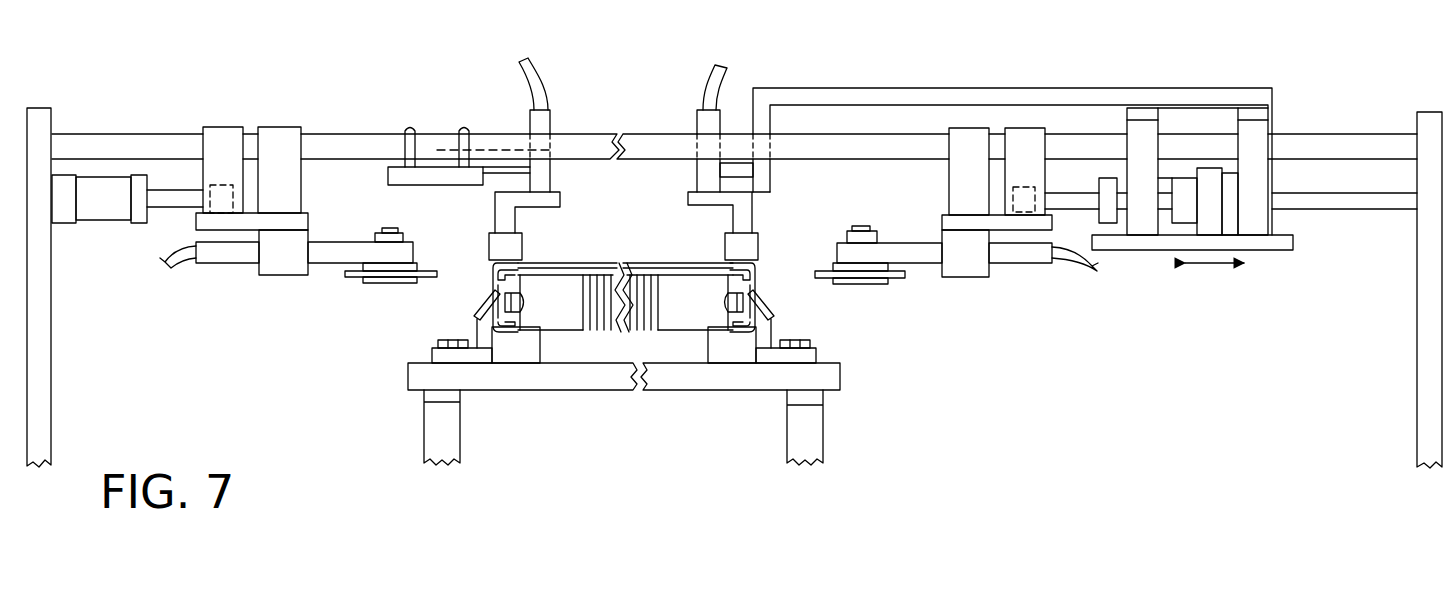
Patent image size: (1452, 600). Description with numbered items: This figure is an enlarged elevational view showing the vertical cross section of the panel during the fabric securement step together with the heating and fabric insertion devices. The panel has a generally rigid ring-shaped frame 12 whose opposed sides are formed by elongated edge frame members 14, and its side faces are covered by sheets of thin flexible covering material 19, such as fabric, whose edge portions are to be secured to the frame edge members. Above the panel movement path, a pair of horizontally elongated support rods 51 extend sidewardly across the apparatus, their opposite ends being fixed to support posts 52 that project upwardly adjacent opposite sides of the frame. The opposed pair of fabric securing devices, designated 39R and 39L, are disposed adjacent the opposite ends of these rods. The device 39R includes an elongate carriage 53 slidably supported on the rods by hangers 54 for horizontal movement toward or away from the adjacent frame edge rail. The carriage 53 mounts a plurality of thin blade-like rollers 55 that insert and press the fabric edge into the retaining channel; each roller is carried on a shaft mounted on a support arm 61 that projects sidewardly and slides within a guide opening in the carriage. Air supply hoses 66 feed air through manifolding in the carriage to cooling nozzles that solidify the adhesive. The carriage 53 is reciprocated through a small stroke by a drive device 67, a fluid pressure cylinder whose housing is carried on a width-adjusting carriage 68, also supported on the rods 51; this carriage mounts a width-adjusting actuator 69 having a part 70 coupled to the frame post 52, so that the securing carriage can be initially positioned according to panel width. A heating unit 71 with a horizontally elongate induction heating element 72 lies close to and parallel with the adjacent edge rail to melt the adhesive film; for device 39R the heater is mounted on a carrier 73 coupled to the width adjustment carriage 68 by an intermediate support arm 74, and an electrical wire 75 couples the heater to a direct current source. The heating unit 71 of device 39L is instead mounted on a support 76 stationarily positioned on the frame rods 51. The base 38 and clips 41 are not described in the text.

The ring-shaped frame 12 is at (663, 340).
The edge frame members 14 is at (545, 333).
The flexible covering material 19 is at (650, 262).
The base support 38 is at (590, 380).
The fabric securing device 39L is at (216, 272).
The fabric securing device 39R is at (1163, 262).
The clip 41 is at (467, 301).
The support rods 51 is at (1345, 140).
The support posts 52 is at (40, 372).
The carriage 53 is at (302, 220).
The hangers 54 is at (970, 145).
The rollers 55 is at (350, 278).
The support arm 61 is at (905, 253).
The air supply hoses 66 is at (163, 262).
The drive device 67 is at (98, 210).
The width-adjusting carriage 68 is at (1265, 243).
The width-adjusting actuator 69 is at (1277, 190).
The part of width-adjusting actuator 70 is at (1340, 205).
The heating unit 71 is at (557, 183).
The electric heating element 72 is at (515, 247).
The carrier 73 is at (548, 198).
The intermediate support arm 74 is at (888, 88).
The electrical wire 75 is at (714, 75).
The support 76 is at (448, 175).